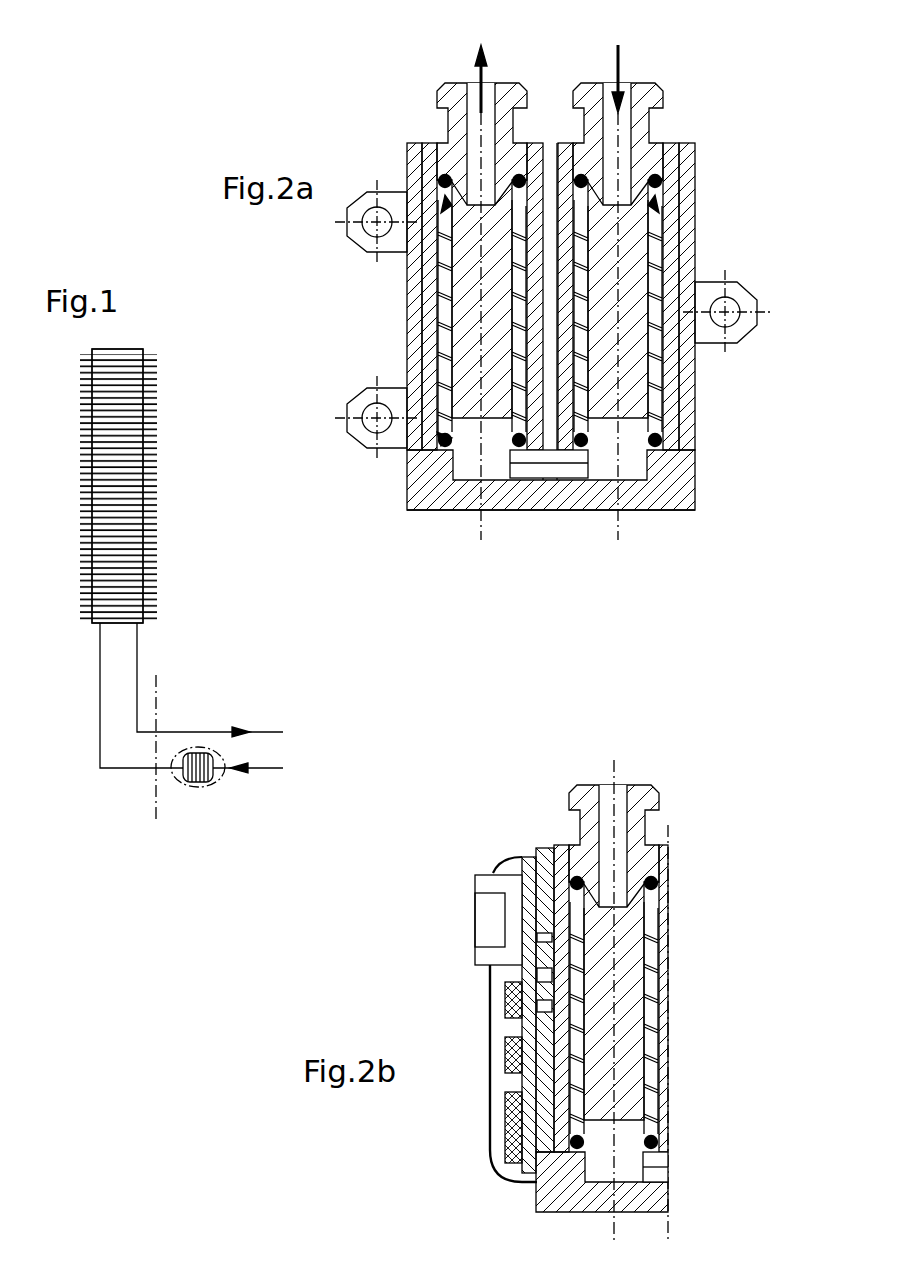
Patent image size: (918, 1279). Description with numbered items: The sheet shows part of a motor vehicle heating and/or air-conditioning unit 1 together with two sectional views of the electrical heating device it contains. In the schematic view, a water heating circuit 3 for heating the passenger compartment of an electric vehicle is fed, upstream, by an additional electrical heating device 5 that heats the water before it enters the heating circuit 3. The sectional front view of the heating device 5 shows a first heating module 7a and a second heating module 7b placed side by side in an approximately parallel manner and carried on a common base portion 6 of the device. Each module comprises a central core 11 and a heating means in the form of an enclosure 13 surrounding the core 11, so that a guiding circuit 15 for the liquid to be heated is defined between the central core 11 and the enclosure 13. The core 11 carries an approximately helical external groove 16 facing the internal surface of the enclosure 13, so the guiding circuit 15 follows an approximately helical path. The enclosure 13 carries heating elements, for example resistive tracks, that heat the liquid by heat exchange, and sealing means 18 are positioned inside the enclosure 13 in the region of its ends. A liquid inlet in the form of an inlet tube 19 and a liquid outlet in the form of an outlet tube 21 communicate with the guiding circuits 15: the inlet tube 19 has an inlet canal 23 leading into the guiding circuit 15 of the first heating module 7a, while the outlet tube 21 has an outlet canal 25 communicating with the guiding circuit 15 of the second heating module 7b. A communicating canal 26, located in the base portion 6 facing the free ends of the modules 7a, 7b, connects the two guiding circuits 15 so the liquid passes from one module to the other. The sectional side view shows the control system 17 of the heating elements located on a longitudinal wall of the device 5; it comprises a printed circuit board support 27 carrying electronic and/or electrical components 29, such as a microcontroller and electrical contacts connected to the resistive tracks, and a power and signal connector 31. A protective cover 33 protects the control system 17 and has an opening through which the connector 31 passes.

In FIG. 1, the motor vehicle heating and/or air-conditioning unit 1 is at (258, 627).
In FIG. 1, the water heating circuit 3 is at (180, 528).
In FIG. 1, the additional electrical heating device 5 is at (196, 752).
In FIG. 2A, the additional electrical heating device 5 is at (746, 424).
In FIG. 2A, the housing base 6 is at (667, 497).
In FIG. 2B, the housing base 6 is at (567, 1205).
In FIG. 2A, the first heating module 7a is at (700, 137).
In FIG. 2B, the first heating module 7a is at (589, 990).
In FIG. 2A, the second heating module 7b is at (546, 301).
In FIG. 2B, the second heating module 7b is at (589, 990).
In FIG. 2A, the central core 11 is at (463, 315).
In FIG. 2B, the central core 11 is at (628, 1100).
In FIG. 2A, the heating means (enclosure) 13 is at (430, 342).
In FIG. 2B, the heating means (enclosure) 13 is at (680, 912).
In FIG. 2A, the guiding circuit 15 is at (663, 185).
In FIG. 2A, the helical external groove 16 is at (655, 370).
In FIG. 2B, the helical external groove 16 is at (650, 953).
In FIG. 2B, the control system 17 is at (463, 1012).
In FIG. 2A, the sealing means 18 is at (518, 448).
In FIG. 2B, the sealing means 18 is at (656, 1141).
In FIG. 2A, the liquid inlet (inlet tube) 19 is at (655, 98).
In FIG. 2B, the liquid inlet (inlet tube) 19 is at (604, 1000).
In FIG. 2A, the liquid outlet (outlet tube) 21 is at (556, 300).
In FIG. 2B, the liquid outlet (outlet tube) 21 is at (604, 1000).
In FIG. 2A, the inlet canal 23 is at (628, 90).
In FIG. 2B, the inlet canal 23 is at (618, 798).
In FIG. 2A, the outlet canal 25 is at (492, 92).
In FIG. 2B, the outlet canal 25 is at (652, 763).
In FIG. 2A, the communicating canal 26 is at (532, 473).
In FIG. 2B, the communicating canal 26 is at (655, 1175).
In FIG. 2B, the printed circuit board (electric circuit support) 27 is at (503, 1174).
In FIG. 2B, the electronic and/or electrical components 29 is at (540, 988).
In FIG. 2B, the power and signal connector 31 is at (455, 938).
In FIG. 2B, the protective cover 33 is at (520, 856).